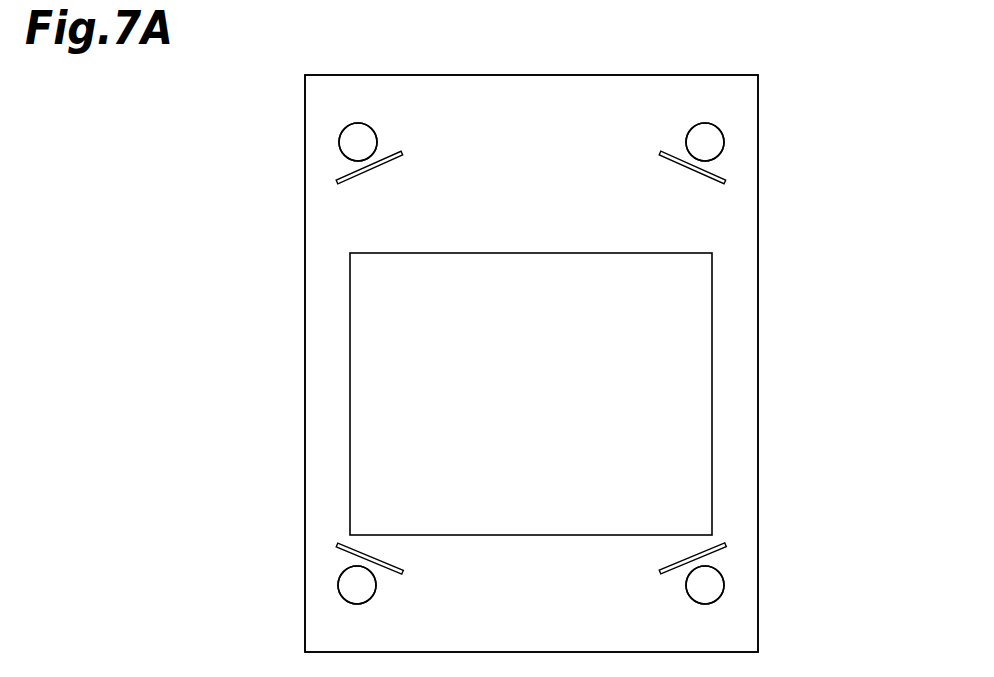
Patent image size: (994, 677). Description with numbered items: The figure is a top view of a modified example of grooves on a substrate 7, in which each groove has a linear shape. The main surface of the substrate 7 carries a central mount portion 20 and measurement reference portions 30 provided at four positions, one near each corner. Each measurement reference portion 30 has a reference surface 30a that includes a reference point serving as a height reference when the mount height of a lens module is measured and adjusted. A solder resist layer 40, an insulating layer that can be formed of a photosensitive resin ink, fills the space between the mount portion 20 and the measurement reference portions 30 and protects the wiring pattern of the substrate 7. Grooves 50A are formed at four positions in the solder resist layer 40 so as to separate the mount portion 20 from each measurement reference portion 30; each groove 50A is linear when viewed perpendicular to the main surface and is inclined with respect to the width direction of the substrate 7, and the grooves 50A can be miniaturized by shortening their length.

The substrate 7 is at (303, 90).
The solder resist layer 40 is at (347, 90).
The mount portion 20 is at (370, 395).
The measurement reference portion 30 is at (343, 125).
The reference surface 30a is at (343, 142).
The groove 50A is at (337, 168).